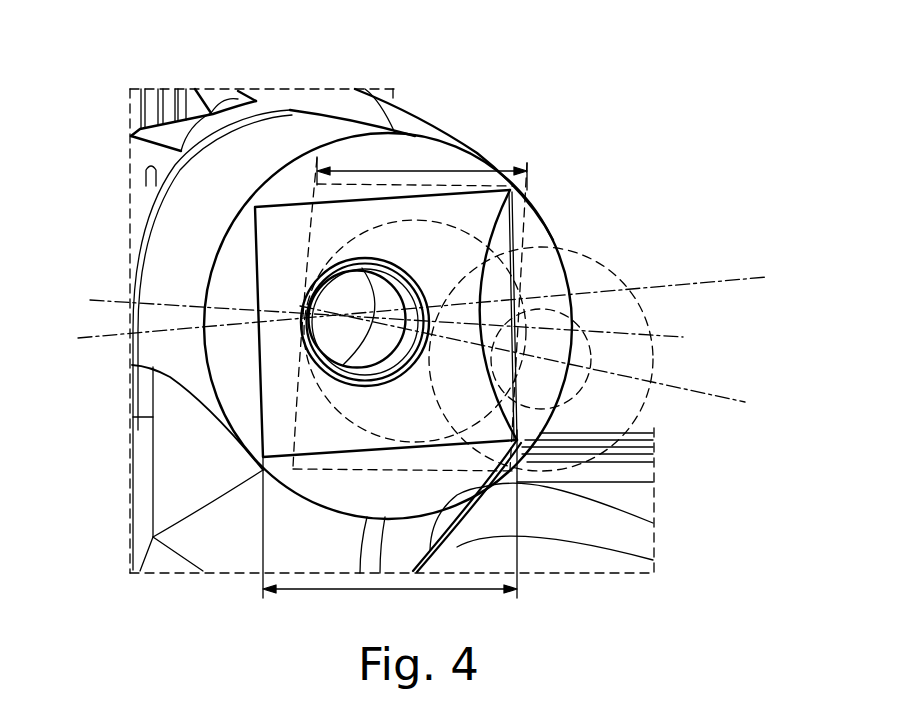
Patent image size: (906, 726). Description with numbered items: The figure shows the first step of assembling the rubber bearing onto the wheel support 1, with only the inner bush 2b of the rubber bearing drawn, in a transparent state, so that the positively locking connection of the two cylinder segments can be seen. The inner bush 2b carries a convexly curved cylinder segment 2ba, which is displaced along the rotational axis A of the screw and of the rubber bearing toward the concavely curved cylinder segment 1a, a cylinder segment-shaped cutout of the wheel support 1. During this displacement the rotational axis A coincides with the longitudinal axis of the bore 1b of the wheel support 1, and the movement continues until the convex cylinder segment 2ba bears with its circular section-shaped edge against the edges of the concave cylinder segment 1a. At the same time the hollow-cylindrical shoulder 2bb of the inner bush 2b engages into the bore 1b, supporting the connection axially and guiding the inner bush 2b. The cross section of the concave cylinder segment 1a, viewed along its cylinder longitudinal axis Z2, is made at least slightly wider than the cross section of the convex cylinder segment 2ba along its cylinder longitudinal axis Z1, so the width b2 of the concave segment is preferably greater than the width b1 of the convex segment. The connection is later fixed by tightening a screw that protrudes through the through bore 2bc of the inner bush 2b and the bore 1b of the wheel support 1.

The wheel support 1 is at (423, 128).
The concavely curved cylinder segment 1a is at (267, 220).
The bore 1b is at (350, 330).
The inner bush 2b is at (588, 283).
The convexly curved cylinder segment 2ba is at (493, 208).
The hollow-cylindrical shoulder 2bb is at (360, 252).
The through bore 2bc is at (580, 343).
The cylinder longitudinal axis Z1 is at (372, 309).
The cylinder longitudinal axis Z2 is at (438, 301).
The rotational axis A is at (534, 366).
The width b1 is at (422, 165).
The width b2 is at (390, 527).